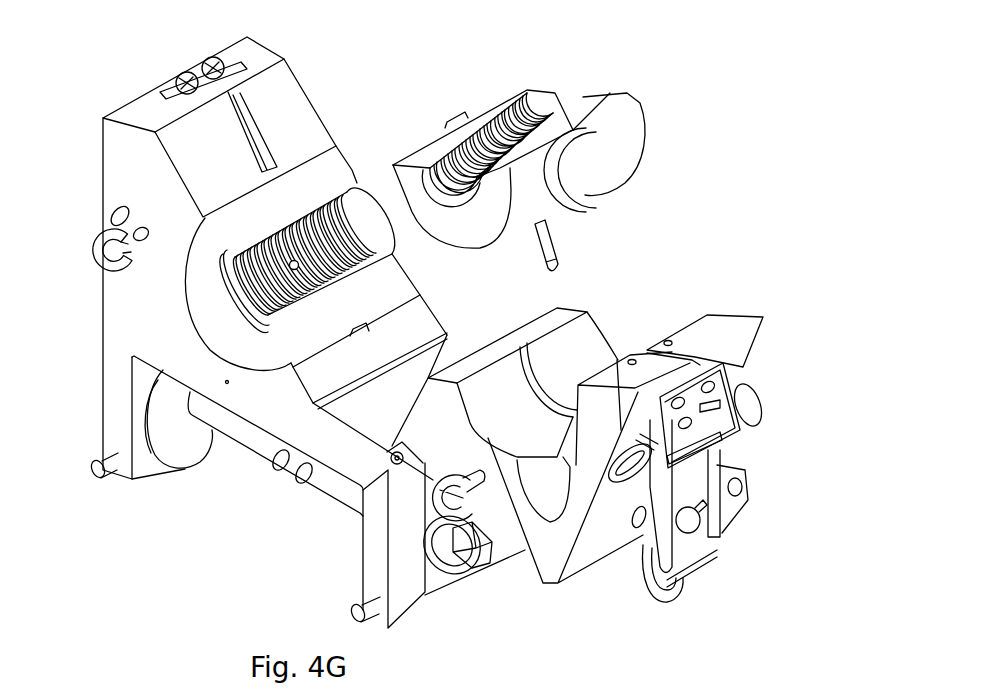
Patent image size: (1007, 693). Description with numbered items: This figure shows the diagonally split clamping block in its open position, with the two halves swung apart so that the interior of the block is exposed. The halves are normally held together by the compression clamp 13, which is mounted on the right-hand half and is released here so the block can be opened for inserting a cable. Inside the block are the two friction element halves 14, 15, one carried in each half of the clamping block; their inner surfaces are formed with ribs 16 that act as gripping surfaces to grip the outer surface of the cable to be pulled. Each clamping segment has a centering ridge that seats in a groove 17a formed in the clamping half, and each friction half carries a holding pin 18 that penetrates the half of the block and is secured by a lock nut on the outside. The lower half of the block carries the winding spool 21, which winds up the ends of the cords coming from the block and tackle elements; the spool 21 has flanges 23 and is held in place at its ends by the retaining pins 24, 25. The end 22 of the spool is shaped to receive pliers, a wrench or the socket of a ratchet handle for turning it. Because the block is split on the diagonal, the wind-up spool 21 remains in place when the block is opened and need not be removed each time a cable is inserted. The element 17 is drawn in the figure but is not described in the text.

The compression clamp 13 is at (700, 548).
The friction element half 14 is at (626, 128).
The friction element half 15 is at (336, 152).
The ribs 16 is at (338, 193).
The ring 17 is at (575, 192).
The groove 17a is at (455, 405).
The holding pin 18 is at (567, 263).
The winding spool 21 is at (257, 443).
The end of the spool 22 is at (470, 565).
The flanges 23 is at (202, 448).
The retaining pin 24 is at (103, 478).
The retaining pin 25 is at (360, 623).